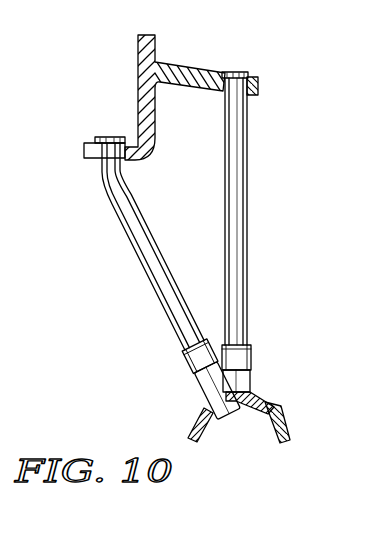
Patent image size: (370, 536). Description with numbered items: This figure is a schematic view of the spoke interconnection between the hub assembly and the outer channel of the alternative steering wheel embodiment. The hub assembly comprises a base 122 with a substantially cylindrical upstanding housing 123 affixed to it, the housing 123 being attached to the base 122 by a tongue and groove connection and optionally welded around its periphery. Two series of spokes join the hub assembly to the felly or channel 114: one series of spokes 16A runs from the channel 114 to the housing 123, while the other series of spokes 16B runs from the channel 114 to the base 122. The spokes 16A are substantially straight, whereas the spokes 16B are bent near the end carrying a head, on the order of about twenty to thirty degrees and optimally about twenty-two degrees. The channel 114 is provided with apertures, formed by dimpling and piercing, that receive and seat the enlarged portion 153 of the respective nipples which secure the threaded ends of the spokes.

The base 122 is at (157, 129).
The upstanding housing 123 is at (258, 90).
The spokes 16A is at (246, 260).
The spokes 16B is at (134, 249).
The enlarged portion of nipple 153 is at (198, 382).
The outer channel 114 is at (281, 411).